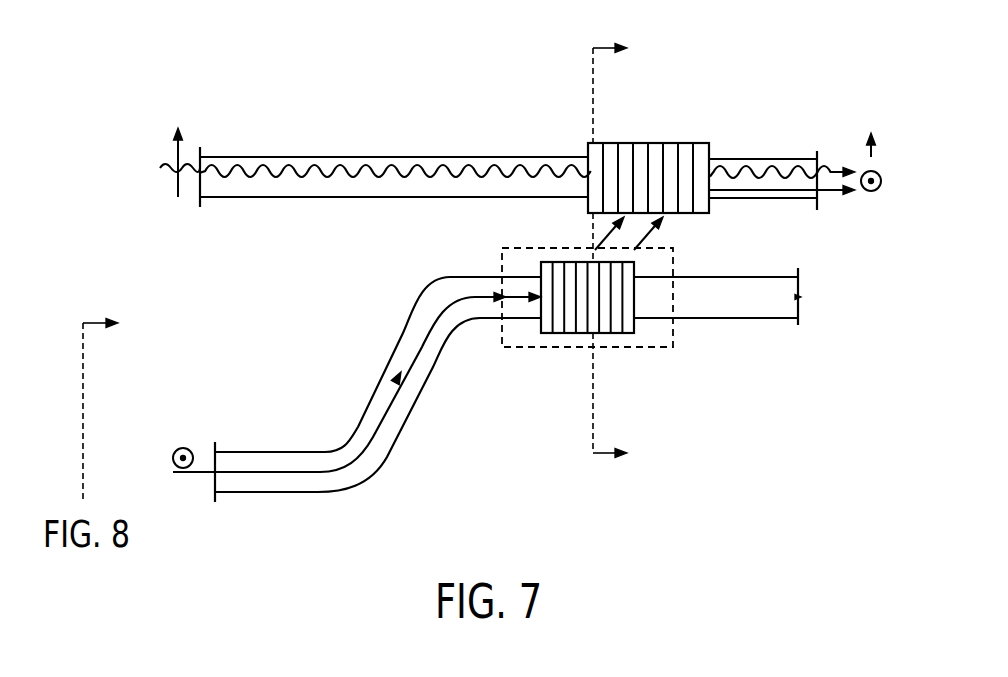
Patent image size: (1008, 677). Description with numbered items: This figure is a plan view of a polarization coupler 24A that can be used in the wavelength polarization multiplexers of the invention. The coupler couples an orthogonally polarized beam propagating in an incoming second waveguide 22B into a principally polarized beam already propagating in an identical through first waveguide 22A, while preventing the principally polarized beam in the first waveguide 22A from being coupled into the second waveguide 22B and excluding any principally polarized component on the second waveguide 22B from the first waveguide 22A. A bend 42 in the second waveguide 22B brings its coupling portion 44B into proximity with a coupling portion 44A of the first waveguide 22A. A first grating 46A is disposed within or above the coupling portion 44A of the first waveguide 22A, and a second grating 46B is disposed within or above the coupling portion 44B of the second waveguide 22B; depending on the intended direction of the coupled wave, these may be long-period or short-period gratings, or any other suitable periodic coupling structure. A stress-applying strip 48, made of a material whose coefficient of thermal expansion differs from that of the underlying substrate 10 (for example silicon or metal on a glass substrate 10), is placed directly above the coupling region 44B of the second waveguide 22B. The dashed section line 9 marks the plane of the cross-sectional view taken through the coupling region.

The section line 9- 9 is at (620, 252).
The substrate 10 is at (270, 342).
The first waveguide 22A is at (277, 155).
The second waveguide 22B is at (487, 390).
The polarization coupler 24A is at (680, 40).
The bend 42 is at (412, 420).
The coupling portion of the first waveguide 44A is at (684, 137).
The coupling portion of the second waveguide 44B is at (607, 339).
The first grating 46A is at (680, 143).
The second grating 46B is at (570, 333).
The stress-applying strip 48 is at (674, 334).